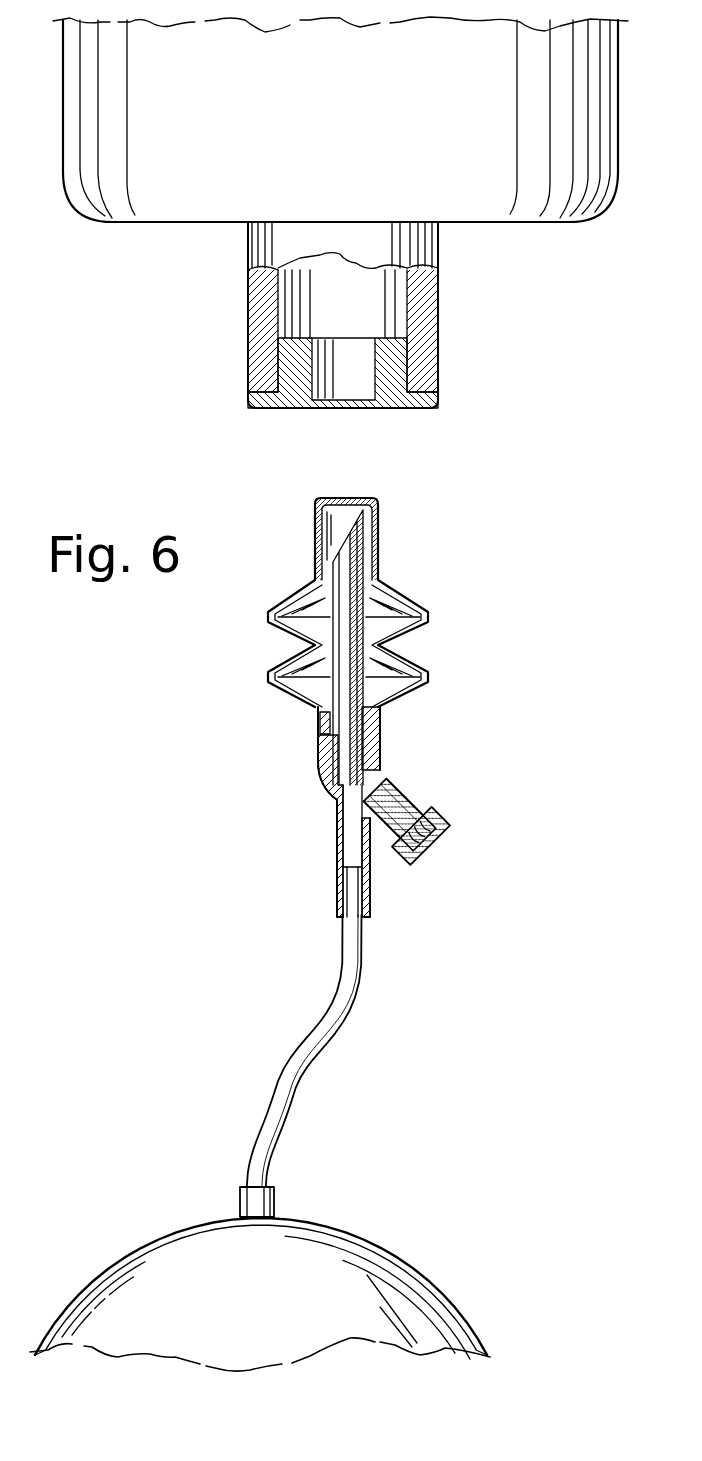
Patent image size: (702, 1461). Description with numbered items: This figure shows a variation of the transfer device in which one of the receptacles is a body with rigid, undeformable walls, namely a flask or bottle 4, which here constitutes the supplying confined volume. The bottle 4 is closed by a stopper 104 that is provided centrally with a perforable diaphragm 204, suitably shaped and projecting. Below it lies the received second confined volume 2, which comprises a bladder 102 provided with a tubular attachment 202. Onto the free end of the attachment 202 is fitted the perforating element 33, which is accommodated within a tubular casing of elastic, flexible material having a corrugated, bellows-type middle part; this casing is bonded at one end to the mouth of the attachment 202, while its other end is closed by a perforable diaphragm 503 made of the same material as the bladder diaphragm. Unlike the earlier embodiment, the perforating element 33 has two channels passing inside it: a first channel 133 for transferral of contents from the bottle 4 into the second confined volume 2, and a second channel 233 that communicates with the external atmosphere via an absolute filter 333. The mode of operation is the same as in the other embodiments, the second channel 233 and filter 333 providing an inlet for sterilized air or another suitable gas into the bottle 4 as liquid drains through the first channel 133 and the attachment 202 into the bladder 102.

The bottle 4 is at (84, 216).
The stopper 104 is at (262, 406).
The perforable diaphragm 204 is at (370, 409).
The perforable diaphragm 503 is at (327, 497).
The second channel 233 is at (353, 543).
The perforating element 33 is at (374, 603).
The first channel 133 is at (337, 690).
The absolute filter 333 is at (418, 803).
The tubular attachment 202 is at (360, 969).
The bladder 102 is at (393, 1257).
The second confined volume 2 is at (100, 1257).